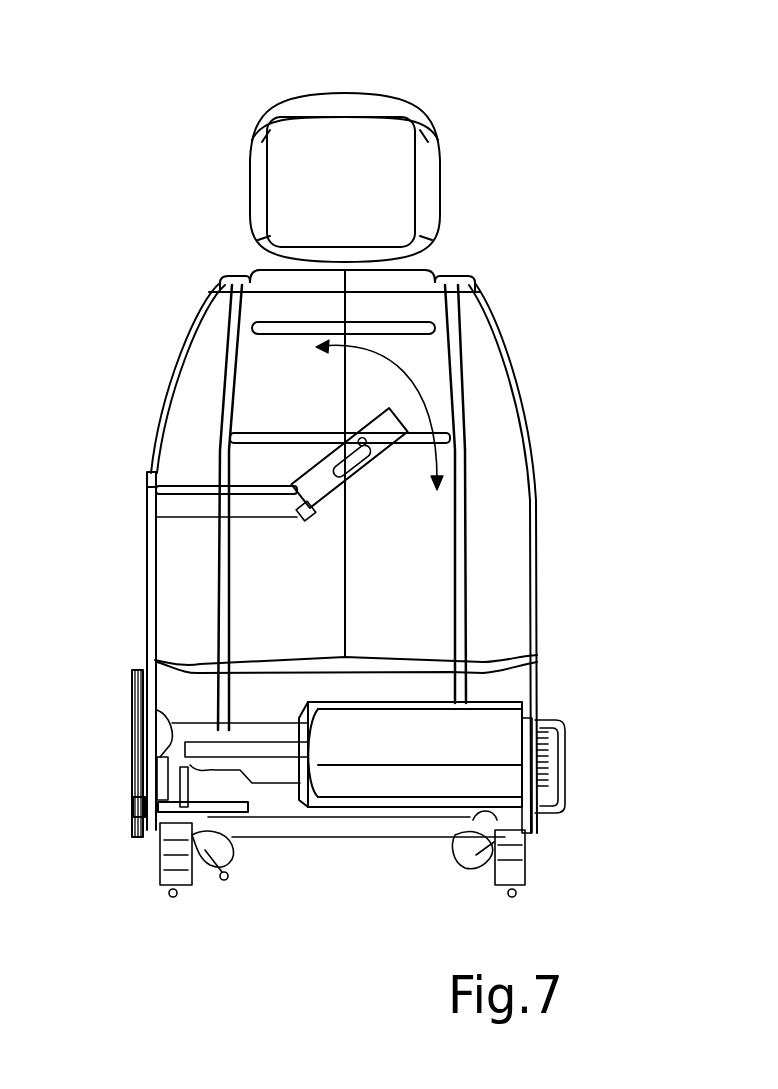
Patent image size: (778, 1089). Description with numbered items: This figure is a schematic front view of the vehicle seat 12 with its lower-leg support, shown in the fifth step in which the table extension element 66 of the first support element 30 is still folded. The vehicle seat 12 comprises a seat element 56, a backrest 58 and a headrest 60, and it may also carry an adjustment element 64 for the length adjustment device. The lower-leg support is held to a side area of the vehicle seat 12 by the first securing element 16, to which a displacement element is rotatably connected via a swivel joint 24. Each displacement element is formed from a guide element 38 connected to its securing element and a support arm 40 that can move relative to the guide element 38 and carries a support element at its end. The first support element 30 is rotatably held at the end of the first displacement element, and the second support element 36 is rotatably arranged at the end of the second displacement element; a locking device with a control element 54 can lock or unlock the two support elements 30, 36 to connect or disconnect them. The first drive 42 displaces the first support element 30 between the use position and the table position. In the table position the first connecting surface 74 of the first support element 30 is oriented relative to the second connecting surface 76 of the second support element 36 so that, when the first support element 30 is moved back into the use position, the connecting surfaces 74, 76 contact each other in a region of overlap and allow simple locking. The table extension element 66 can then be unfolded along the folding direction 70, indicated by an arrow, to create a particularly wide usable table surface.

The vehicle seat 12 is at (529, 264).
The first securing element 16 is at (145, 738).
The swivel joint 24 is at (138, 806).
The first support element 30 is at (165, 495).
The second support element 36 is at (397, 780).
The guide element 38 is at (132, 715).
The support arm 40 is at (148, 595).
The first drive 42 is at (224, 870).
The control element 54 is at (368, 448).
The seat element 56 is at (507, 688).
The backrest 58 is at (537, 520).
The headrest 60 is at (358, 137).
The adjustment element 64 is at (562, 750).
The table extension element 66 is at (365, 418).
The folding direction 70 is at (415, 378).
The first connecting surface 74 is at (300, 512).
The second connecting surface 76 is at (300, 785).